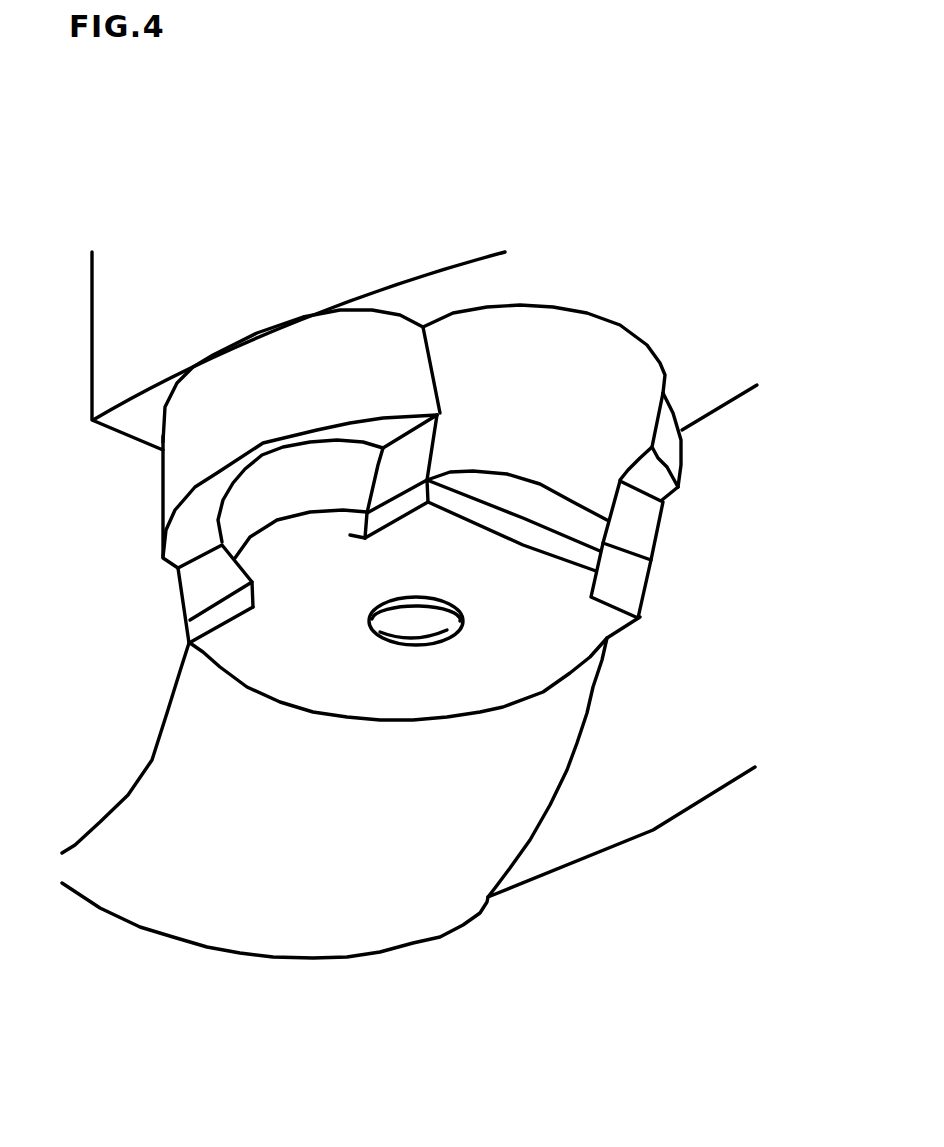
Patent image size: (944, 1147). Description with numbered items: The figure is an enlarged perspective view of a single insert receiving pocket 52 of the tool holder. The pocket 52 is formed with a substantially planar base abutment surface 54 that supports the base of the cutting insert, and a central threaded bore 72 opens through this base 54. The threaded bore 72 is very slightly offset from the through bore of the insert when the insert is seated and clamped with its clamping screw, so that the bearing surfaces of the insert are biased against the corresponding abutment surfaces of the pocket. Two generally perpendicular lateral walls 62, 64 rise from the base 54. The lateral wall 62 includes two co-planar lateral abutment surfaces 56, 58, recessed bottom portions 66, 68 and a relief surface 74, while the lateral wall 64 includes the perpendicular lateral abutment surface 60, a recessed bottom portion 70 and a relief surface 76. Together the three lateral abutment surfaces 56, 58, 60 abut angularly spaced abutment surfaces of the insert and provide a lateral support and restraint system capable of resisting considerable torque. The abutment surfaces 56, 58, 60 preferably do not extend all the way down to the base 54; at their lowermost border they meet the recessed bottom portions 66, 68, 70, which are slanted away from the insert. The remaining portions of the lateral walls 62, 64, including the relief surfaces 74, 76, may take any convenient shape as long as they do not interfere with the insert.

The pocket 52 is at (609, 190).
The base abutment surface 54 is at (307, 672).
The lateral abutment surface 56 is at (203, 588).
The lateral abutment surface 58 is at (403, 458).
The lateral abutment surface 60 is at (638, 533).
The lateral wall 62 is at (308, 350).
The lateral wall 64 is at (590, 423).
The recessed bottom portion 66 is at (240, 596).
The recessed bottom portion 68 is at (382, 517).
The recessed bottom portion 70 is at (627, 590).
The threaded bore 72 is at (443, 622).
The relief surface 74 is at (307, 517).
The relief surface 76 is at (553, 530).